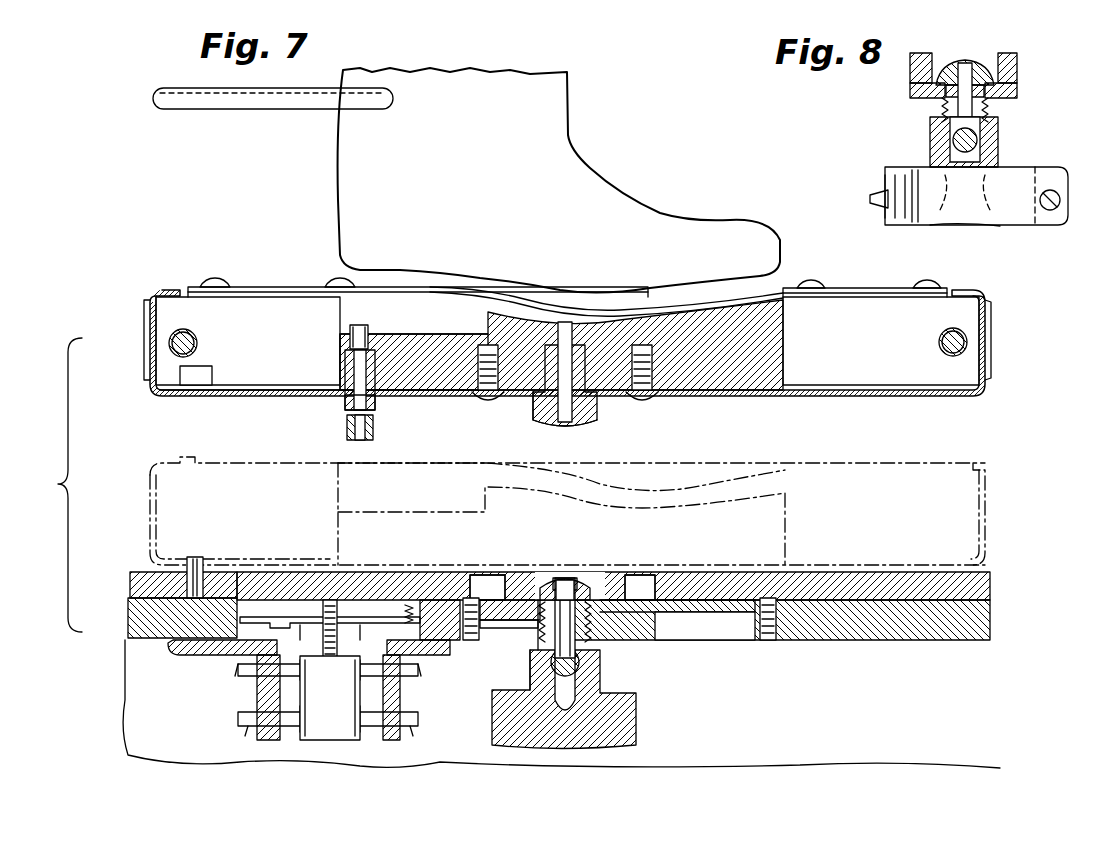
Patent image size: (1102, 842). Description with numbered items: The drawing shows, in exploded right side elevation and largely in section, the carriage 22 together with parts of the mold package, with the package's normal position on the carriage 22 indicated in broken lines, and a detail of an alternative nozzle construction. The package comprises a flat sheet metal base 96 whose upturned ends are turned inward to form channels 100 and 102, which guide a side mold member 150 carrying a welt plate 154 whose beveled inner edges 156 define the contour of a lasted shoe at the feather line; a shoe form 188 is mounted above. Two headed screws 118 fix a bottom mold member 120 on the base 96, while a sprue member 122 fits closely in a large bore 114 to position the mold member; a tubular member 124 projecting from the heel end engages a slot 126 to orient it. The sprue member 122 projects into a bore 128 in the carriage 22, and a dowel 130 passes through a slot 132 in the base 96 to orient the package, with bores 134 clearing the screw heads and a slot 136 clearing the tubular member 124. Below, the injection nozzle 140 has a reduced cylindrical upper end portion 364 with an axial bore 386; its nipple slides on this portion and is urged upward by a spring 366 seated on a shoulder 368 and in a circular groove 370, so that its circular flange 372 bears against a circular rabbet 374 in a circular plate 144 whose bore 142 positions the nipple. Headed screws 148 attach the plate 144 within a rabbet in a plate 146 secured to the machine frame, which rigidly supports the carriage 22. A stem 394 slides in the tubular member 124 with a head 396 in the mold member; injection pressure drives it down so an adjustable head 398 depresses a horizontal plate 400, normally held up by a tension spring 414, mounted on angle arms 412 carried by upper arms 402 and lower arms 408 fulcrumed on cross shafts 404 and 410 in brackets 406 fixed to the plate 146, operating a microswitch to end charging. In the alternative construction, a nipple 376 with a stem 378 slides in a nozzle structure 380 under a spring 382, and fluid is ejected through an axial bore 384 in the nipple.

In FIG. 7, the shoe form 188 is at (600, 188).
In FIG. 7, the welt plate 154 is at (267, 285).
In FIG. 7, the beveled inner edges 156 is at (780, 290).
In FIG. 7, the channel 102 is at (148, 300).
In FIG. 7, the channel 100 is at (990, 300).
In FIG. 7, the base 96 is at (820, 395).
In FIG. 7, the side mold member 150 is at (267, 373).
In FIG. 7, the slot 132 is at (190, 386).
In FIG. 7, the slot 126 is at (300, 395).
In FIG. 7, the bottom mold member 120 is at (722, 392).
In FIG. 7, the head 396 is at (362, 326).
In FIG. 7, the stem 394 is at (355, 373).
In FIG. 7, the tubular member 124 is at (375, 405).
In FIG. 7, the adjustable head 398 is at (372, 432).
In FIG. 7, the headed screws 118 is at (488, 400).
In FIG. 7, the sprue member 122 is at (590, 420).
In FIG. 7, the large bore 114 is at (540, 418).
In FIG. 7, the dowel 130 is at (196, 557).
In FIG. 7, the slot 136 is at (240, 575).
In FIG. 7, the tension spring 414 is at (408, 606).
In FIG. 7, the headed screws 148 is at (470, 600).
In FIG. 7, the bores 134 is at (480, 573).
In FIG. 7, the circular groove 370 is at (560, 585).
In FIG. 7, the reduced cylindrical upper end portion 364 is at (572, 580).
In FIG. 7, the bore 128 is at (592, 592).
In FIG. 8, the bore 128 is at (992, 68).
In FIG. 7, the carriage 22 is at (990, 590).
In FIG. 8, the carriage 22 is at (1015, 68).
In FIG. 7, the horizontal plate 400 is at (262, 618).
In FIG. 7, the upper arms 402 is at (332, 622).
In FIG. 7, the angle arms 412 is at (362, 622).
In FIG. 7, the brackets 406 is at (170, 648).
In FIG. 7, the cross shaft 404 is at (238, 670).
In FIG. 7, the cross shaft 410 is at (238, 718).
In FIG. 7, the lower arms 408 is at (310, 738).
In FIG. 7, the circular rabbet 374 is at (520, 628).
In FIG. 7, the circular flange 372 is at (536, 640).
In FIG. 7, the shoulder 368 is at (530, 660).
In FIG. 7, the spring 366 is at (590, 630).
In FIG. 7, the bore 142 is at (640, 600).
In FIG. 7, the axial bore 386 is at (580, 660).
In FIG. 7, the injection nozzle 140 is at (598, 690).
In FIG. 7, the circular plate 144 is at (705, 620).
In FIG. 7, the plate 146 is at (868, 640).
In FIG. 8, the plate 146 is at (1015, 90).
In FIG. 8, the nipple 376 is at (945, 78).
In FIG. 8, the axial bore 384 is at (965, 75).
In FIG. 8, the spring 382 is at (940, 112).
In FIG. 8, the stem 378 is at (985, 112).
In FIG. 8, the nozzle structure 380 is at (998, 160).